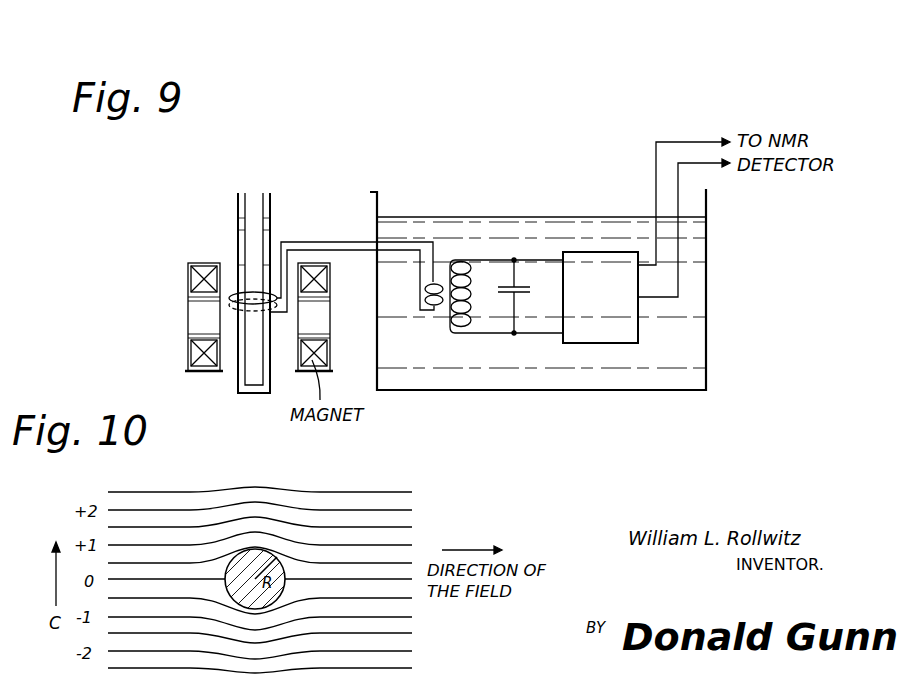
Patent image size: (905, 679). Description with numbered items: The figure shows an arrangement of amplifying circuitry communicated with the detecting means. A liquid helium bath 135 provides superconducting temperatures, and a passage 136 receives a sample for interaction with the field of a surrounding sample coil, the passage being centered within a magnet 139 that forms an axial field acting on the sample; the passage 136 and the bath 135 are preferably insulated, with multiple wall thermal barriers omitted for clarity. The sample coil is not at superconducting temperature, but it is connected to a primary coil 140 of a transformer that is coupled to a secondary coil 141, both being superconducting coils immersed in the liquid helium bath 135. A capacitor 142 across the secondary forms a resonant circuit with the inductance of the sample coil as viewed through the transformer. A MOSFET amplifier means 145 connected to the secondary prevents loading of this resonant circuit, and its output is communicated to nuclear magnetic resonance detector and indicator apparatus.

The liquid helium bath 135 is at (471, 391).
The passage 136 is at (263, 196).
The magnet 139 is at (190, 284).
The primary coil of transformer 140 is at (441, 310).
The secondary coil of transformer 141 is at (458, 259).
The capacitor 142 is at (522, 297).
The MOSFET amplifier means 145 is at (600, 252).